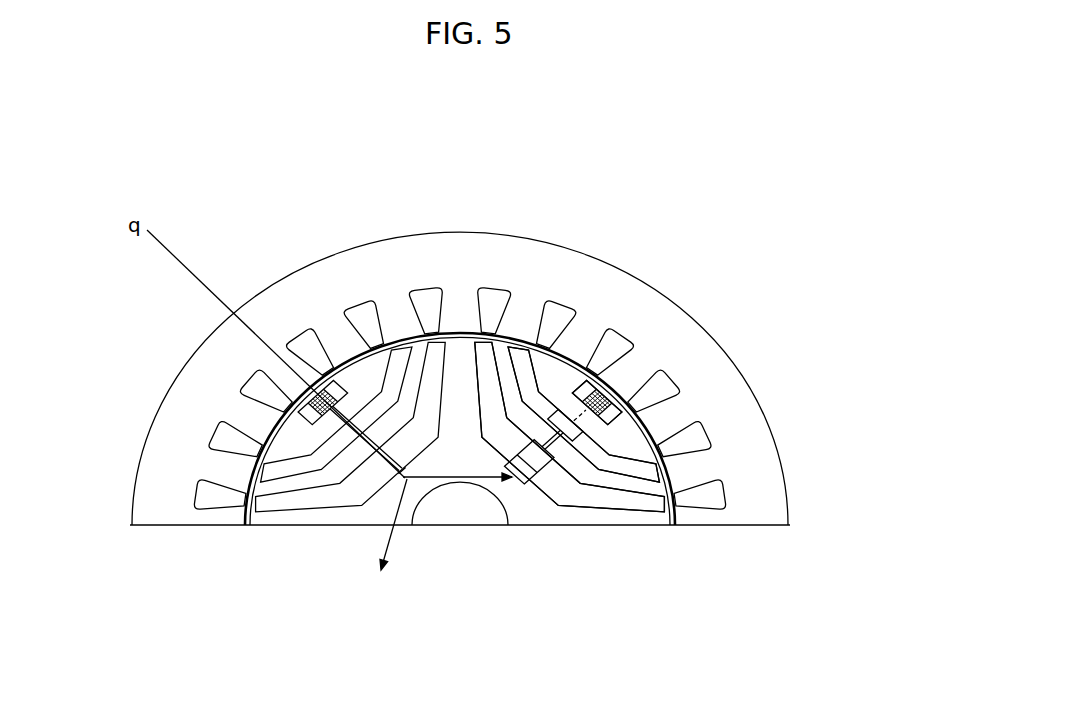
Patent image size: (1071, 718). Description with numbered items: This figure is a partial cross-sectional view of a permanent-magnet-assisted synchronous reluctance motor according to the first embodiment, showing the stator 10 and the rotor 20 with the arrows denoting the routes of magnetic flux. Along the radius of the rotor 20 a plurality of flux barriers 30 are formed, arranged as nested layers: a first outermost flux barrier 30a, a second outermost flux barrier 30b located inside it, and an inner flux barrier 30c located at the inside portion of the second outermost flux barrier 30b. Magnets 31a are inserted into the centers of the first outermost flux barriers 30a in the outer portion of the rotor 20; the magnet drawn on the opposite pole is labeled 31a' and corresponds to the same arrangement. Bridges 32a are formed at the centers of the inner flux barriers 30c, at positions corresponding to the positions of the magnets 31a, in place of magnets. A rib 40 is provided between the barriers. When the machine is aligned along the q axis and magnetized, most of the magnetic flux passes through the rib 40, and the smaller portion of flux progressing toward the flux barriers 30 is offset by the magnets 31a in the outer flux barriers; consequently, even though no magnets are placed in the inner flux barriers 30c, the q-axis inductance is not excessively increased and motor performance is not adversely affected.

The stator 10 is at (162, 495).
The rotor 20 is at (528, 512).
The flux barriers 30 is at (858, 472).
The first outermost flux barrier 30a is at (633, 402).
The second outermost flux barrier 30b is at (640, 450).
The inner flux barrier 30c is at (637, 497).
The magnet 31a is at (629, 309).
The permanent magnet 31a' is at (300, 310).
The rib 40 is at (550, 420).
The bridge 32a is at (548, 478).